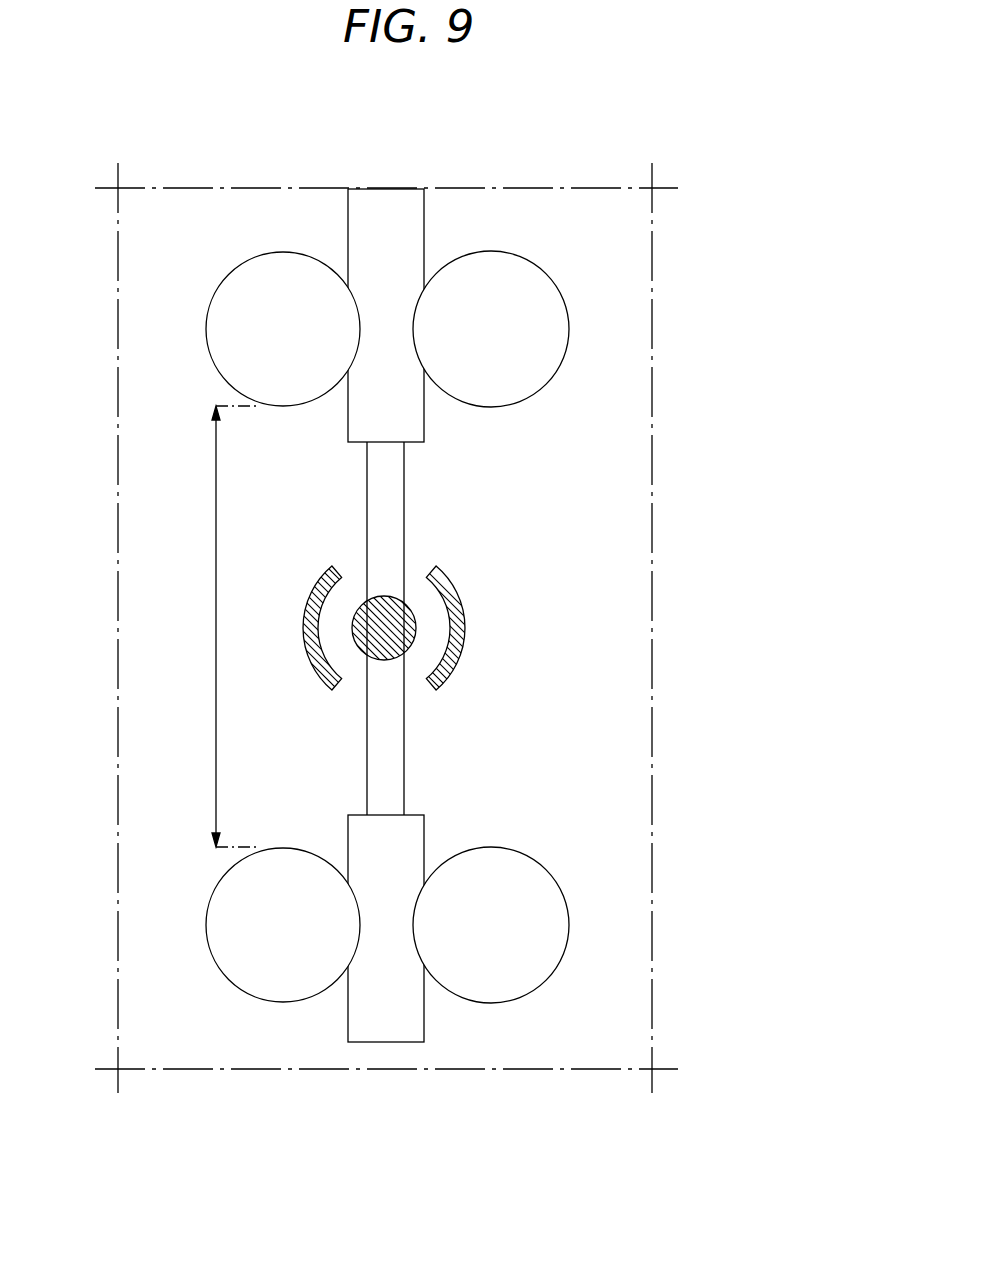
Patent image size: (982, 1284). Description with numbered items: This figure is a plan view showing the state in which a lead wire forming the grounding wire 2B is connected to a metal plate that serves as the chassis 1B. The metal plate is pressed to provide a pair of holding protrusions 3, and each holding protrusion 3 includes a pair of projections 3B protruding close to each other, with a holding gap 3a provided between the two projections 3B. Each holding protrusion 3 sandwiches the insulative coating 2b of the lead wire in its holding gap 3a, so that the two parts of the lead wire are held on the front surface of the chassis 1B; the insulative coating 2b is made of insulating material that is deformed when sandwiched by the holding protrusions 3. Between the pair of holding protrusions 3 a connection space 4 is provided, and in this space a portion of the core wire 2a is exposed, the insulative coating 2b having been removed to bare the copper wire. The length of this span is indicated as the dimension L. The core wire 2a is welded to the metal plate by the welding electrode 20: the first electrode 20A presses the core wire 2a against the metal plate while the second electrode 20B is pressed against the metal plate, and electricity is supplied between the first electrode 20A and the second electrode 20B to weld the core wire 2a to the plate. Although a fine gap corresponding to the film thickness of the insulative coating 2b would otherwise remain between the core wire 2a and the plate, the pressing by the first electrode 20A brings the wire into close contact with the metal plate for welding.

The chassis 1B is at (601, 388).
The grounding wire 2B is at (567, 615).
The core wire 2a is at (386, 740).
The insulative coating 2b is at (402, 414).
The holding protrusion 3 is at (400, 630).
The projection 3B is at (284, 280).
The holding gap 3a is at (413, 328).
The connection space 4 is at (198, 627).
The length L is at (183, 406).
The welding electrode 20 is at (372, 610).
The first electrode 20A is at (387, 634).
The second electrode 20B is at (313, 592).